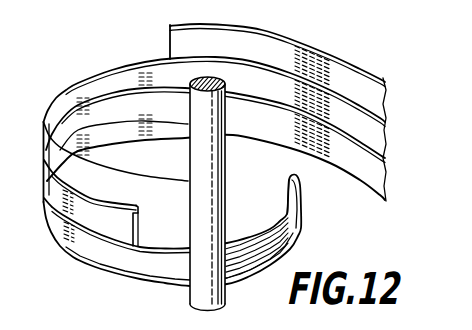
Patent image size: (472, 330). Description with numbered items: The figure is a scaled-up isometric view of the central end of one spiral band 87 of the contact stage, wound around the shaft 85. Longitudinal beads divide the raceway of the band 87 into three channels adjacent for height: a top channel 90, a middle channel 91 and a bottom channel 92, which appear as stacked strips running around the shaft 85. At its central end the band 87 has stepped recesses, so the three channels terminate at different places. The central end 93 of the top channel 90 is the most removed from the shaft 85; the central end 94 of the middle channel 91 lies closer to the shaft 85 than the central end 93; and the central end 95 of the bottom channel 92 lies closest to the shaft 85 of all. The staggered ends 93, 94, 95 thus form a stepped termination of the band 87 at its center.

The shaft 85 is at (191, 163).
The spiral band 87 is at (67, 264).
The top channel 90 is at (383, 102).
The middle channel 91 is at (382, 145).
The bottom channel 92 is at (381, 181).
The central end of the top channel 93 is at (169, 43).
The central end of the middle channel 94 is at (138, 229).
The central end of the bottom channel 95 is at (285, 186).